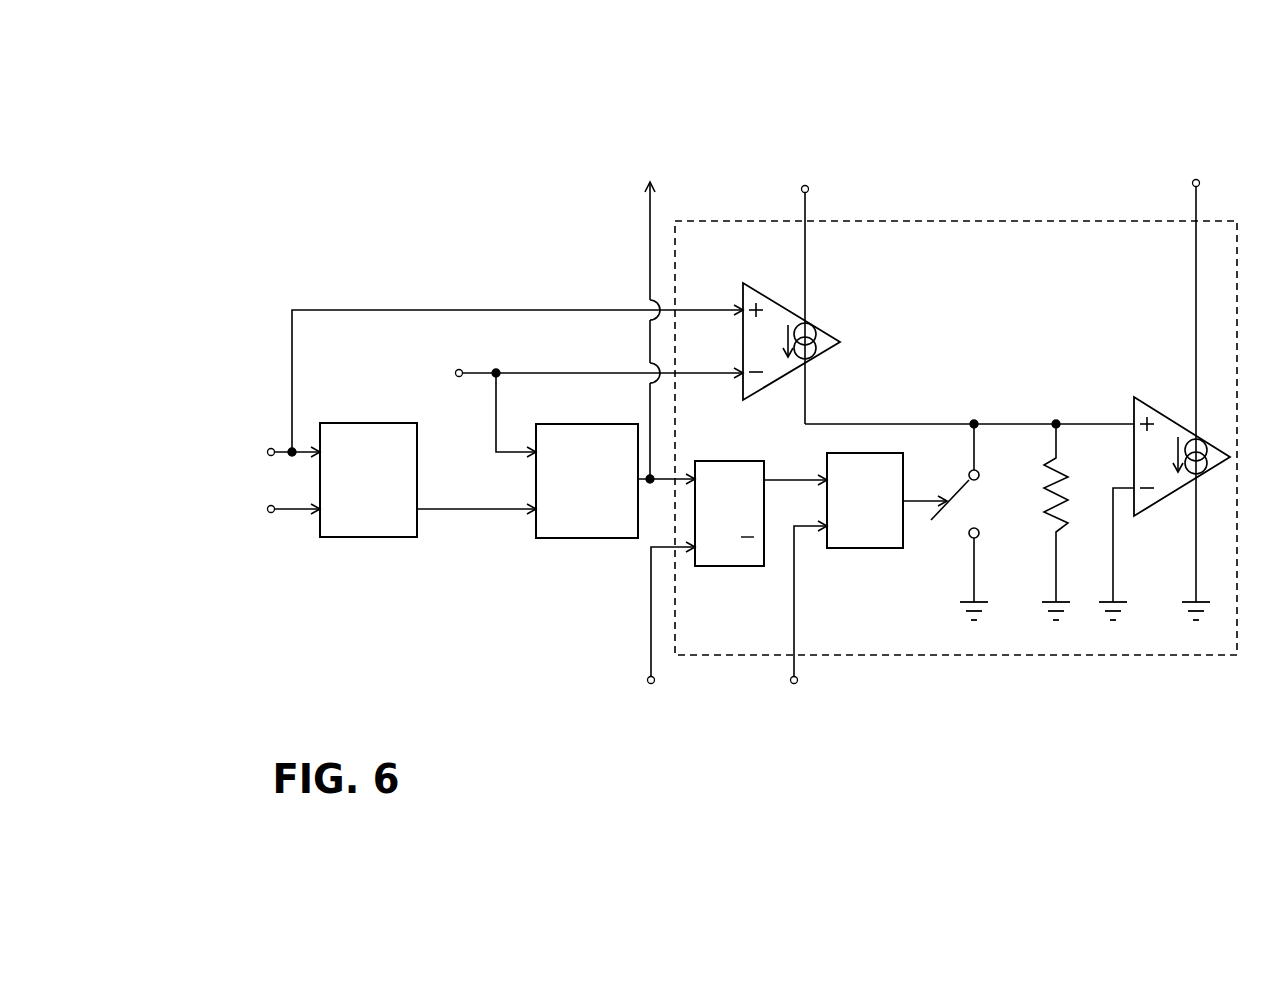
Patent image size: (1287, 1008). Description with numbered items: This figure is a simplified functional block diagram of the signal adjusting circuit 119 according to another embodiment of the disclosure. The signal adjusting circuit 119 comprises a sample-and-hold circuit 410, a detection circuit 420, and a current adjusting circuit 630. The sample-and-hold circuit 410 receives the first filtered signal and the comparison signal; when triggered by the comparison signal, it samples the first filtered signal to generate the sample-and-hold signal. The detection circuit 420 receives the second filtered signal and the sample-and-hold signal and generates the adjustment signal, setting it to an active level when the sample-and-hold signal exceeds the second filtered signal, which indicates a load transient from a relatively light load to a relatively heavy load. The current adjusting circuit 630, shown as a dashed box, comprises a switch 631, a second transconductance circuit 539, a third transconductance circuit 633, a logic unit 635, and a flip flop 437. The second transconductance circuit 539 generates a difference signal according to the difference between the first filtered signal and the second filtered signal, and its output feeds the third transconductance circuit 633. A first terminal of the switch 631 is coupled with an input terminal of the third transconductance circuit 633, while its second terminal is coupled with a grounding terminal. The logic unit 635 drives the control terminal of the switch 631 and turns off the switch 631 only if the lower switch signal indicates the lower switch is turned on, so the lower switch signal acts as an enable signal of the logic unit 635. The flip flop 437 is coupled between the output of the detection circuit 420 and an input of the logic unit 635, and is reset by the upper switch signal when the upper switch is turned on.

The signal adjusting circuit 119 is at (266, 139).
The sample-and-hold circuit 410 is at (367, 539).
The detection circuit 420 is at (586, 539).
The flip flop 437 is at (728, 567).
The second transconductance circuit 539 is at (792, 307).
The current adjusting circuit 630 is at (955, 221).
The switch 631 is at (972, 503).
The third transconductance circuit 633 is at (1175, 400).
The logic unit 635 is at (865, 549).